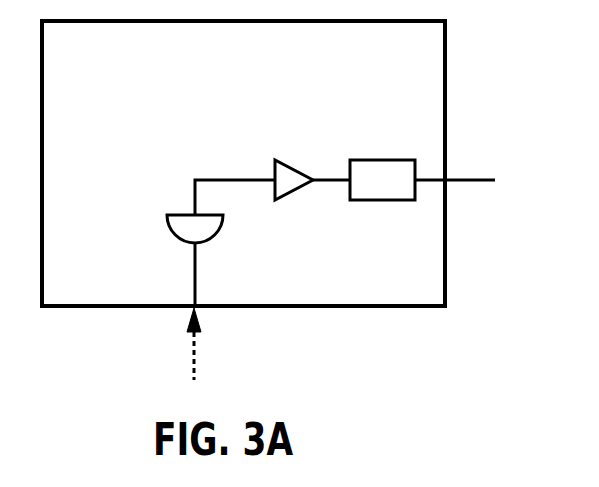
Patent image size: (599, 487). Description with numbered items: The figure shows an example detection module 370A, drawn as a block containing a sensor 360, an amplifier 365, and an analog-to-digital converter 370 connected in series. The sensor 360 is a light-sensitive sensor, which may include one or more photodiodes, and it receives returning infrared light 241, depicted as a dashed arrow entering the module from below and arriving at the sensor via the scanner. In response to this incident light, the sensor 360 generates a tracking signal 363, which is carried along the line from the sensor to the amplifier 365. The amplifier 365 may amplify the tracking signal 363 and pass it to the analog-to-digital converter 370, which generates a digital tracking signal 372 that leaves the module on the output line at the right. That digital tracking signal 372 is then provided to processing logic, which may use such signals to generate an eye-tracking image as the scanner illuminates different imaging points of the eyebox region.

The detection module 370A is at (115, 70).
The sensor 360 is at (178, 213).
The tracking signal 363 is at (195, 180).
The amplifier 365 is at (276, 160).
The analog-to-digital converter (ADC) 370 is at (370, 200).
The digital tracking signal 372 is at (472, 178).
The returning infrared light 241 is at (195, 348).